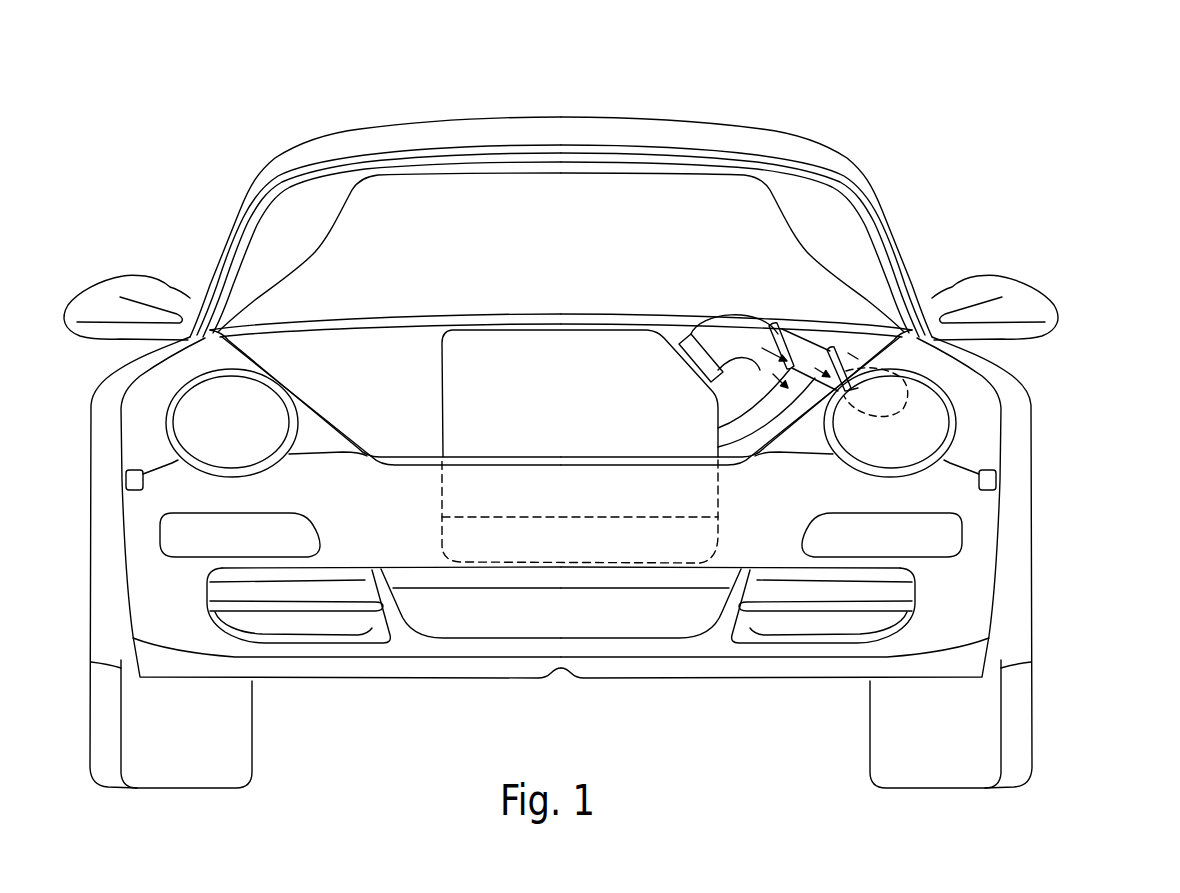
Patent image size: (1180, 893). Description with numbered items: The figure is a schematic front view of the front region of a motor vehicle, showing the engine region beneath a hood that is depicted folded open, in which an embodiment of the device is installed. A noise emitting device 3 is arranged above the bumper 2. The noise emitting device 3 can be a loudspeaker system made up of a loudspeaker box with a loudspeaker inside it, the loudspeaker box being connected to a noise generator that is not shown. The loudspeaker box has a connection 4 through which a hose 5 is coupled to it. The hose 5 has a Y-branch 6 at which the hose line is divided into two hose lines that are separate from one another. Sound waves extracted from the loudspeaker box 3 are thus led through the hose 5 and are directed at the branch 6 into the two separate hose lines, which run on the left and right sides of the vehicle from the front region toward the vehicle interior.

The bumper 2 is at (965, 563).
The noise emitting device 3 is at (580, 357).
The connection 4 is at (705, 353).
The hose 5 is at (735, 343).
The Y-branch 6 is at (812, 361).